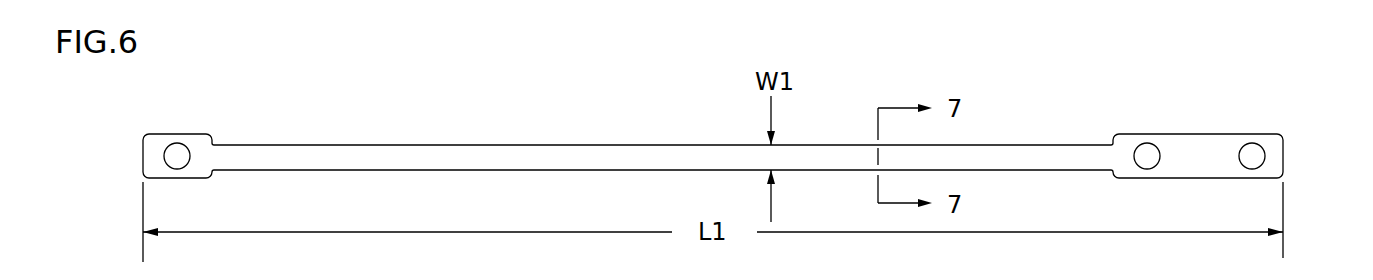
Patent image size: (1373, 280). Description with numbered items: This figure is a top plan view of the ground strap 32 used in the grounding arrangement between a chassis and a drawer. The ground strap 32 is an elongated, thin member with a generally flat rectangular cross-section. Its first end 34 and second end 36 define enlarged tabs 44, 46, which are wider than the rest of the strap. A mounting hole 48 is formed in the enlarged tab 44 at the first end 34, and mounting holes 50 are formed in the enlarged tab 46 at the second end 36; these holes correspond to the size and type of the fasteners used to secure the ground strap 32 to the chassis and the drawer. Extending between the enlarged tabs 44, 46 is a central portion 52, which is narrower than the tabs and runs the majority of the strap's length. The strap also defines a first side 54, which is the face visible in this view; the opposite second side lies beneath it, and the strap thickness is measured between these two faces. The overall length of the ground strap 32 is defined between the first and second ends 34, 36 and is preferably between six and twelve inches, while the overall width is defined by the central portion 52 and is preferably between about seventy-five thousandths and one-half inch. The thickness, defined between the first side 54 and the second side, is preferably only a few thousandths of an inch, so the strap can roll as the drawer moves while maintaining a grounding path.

The ground strap 32 is at (348, 113).
The first end 34 is at (150, 143).
The second end 36 is at (1277, 142).
The enlarged tab 44 is at (152, 170).
The enlarged tab 46 is at (1195, 155).
The mounting hole 48 is at (187, 148).
The mounting holes 50 is at (1152, 142).
The central portion 52 is at (440, 145).
The first side 54 is at (530, 158).